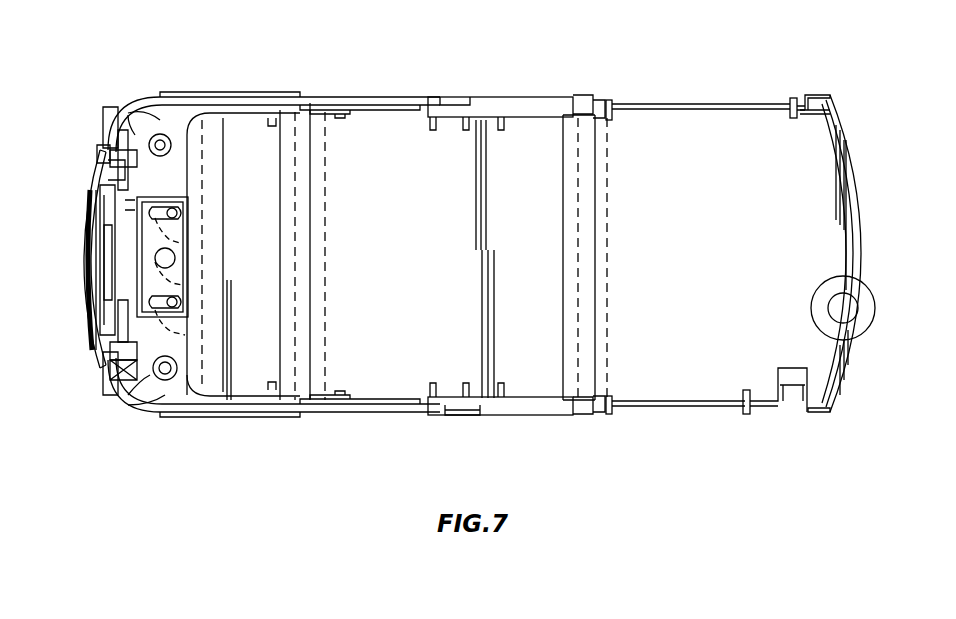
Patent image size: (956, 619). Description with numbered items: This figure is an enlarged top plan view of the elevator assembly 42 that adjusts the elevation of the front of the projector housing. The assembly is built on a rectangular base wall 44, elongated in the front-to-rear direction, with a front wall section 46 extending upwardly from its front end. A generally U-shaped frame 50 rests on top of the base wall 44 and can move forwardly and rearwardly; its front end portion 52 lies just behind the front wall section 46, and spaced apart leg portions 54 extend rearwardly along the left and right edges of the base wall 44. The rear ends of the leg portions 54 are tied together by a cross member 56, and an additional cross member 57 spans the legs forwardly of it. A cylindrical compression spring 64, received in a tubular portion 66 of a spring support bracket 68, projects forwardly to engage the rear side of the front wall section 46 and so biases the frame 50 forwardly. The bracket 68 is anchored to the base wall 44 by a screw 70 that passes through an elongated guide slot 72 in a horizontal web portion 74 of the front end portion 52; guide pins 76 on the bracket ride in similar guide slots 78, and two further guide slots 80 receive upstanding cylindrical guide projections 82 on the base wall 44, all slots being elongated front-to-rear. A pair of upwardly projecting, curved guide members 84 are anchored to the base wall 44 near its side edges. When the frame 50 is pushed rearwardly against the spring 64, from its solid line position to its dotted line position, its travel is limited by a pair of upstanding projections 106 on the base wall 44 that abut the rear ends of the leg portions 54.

The elevator assembly 42 is at (716, 70).
The base wall 44 is at (762, 272).
The front wall section 46 is at (82, 185).
The U-shaped frame 50 is at (604, 153).
The front end portion 52 is at (94, 284).
The leg portions 54 is at (272, 97).
The cross member 56 is at (597, 298).
The additional cross member 57 is at (312, 222).
The compression spring 64 is at (88, 206).
The tubular portion 66 is at (102, 322).
The spring support bracket 68 is at (126, 358).
The screw 70 is at (178, 258).
The guide slot 72 is at (187, 286).
The web portion 74 is at (175, 182).
The guide pins 76 is at (178, 213).
The guide slots 78 is at (187, 240).
The guide slots 80 is at (132, 107).
The guide projections 82 is at (165, 140).
The guide members 84 is at (515, 102).
The upstanding projections 106 is at (615, 107).